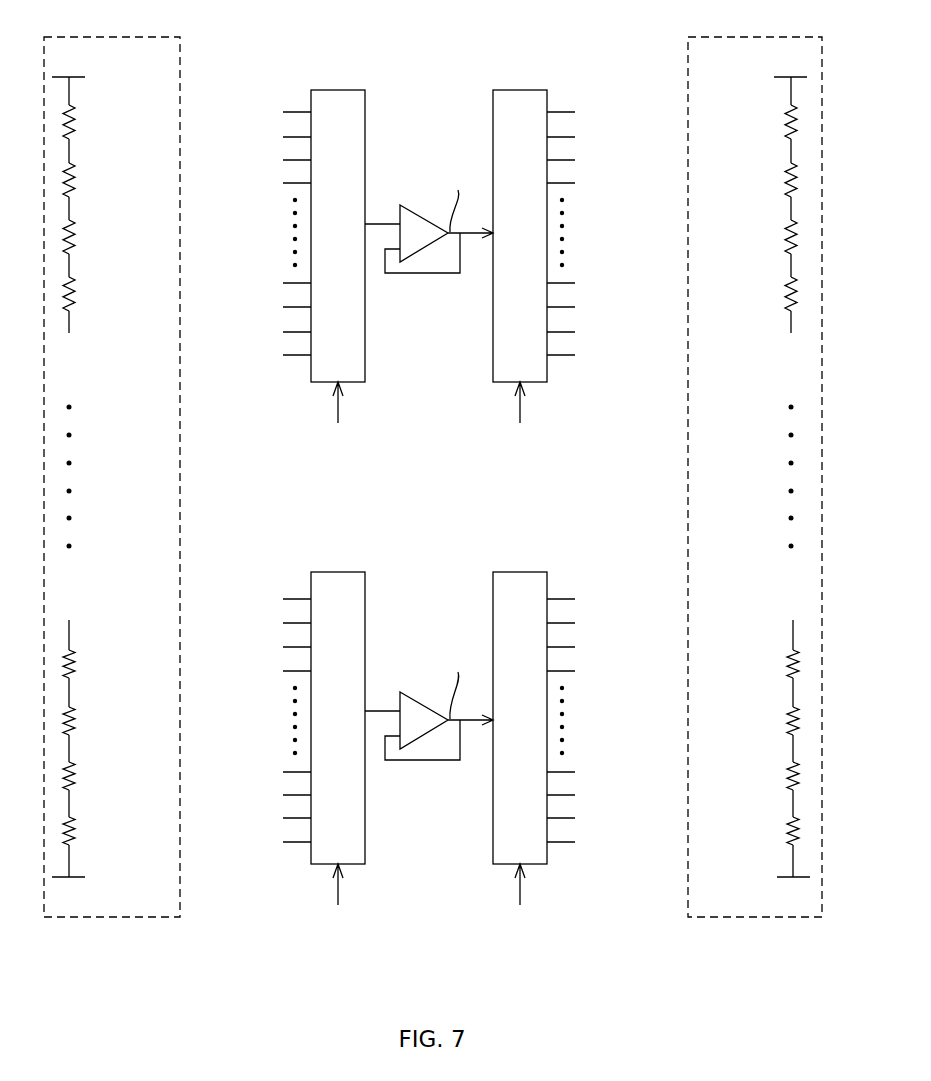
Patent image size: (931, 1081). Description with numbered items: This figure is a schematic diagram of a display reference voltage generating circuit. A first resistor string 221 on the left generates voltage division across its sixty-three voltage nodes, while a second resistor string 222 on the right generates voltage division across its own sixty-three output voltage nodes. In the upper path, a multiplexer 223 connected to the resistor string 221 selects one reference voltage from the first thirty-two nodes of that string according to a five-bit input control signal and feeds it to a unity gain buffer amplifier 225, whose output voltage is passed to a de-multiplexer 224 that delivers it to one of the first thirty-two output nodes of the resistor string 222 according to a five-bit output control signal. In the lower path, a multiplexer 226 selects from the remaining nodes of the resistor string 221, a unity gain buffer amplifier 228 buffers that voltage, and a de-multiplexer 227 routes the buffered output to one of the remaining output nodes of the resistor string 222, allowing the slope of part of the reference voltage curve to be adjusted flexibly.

The resistor string 221 is at (105, 921).
The resistor string 222 is at (770, 921).
The multiplexer 223 is at (338, 90).
The de-multiplexer 224 is at (518, 90).
The unity gain buffer amplifier 225 is at (430, 212).
The multiplexer 226 is at (338, 572).
The de-multiplexer 227 is at (518, 572).
The unity gain buffer amplifier 228 is at (430, 699).